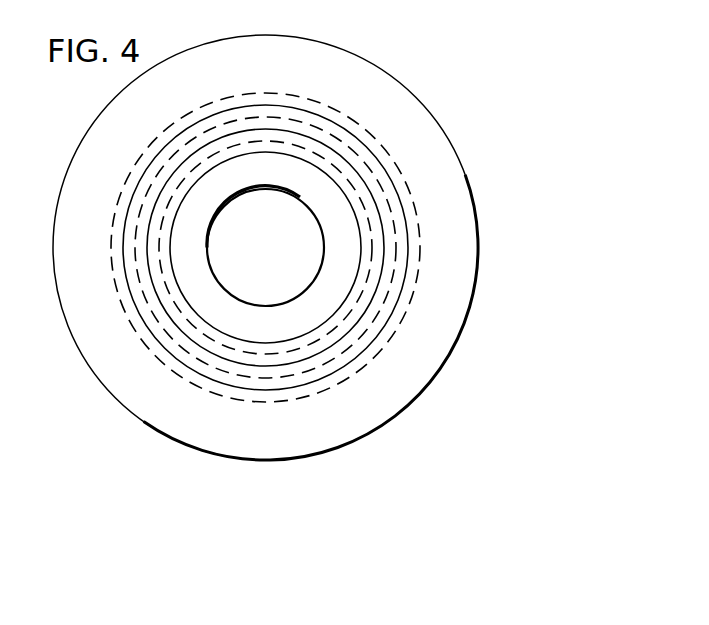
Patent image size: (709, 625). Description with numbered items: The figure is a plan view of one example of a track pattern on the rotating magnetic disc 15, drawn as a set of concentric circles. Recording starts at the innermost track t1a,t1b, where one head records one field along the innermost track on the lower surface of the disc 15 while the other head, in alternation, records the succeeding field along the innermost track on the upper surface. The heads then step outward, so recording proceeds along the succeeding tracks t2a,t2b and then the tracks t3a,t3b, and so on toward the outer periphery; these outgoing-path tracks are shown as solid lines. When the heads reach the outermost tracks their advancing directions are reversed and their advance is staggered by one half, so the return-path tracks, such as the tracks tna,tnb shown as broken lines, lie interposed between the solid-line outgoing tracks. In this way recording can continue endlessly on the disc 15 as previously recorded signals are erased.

The disc 15 is at (418, 100).
The innermost tracks t1a,t1b is at (304, 162).
The succeeding tracks t2a,t2b is at (372, 167).
The succeeding tracks t3a,t3b is at (402, 189).
The return-path tracks tna,tnb is at (374, 221).